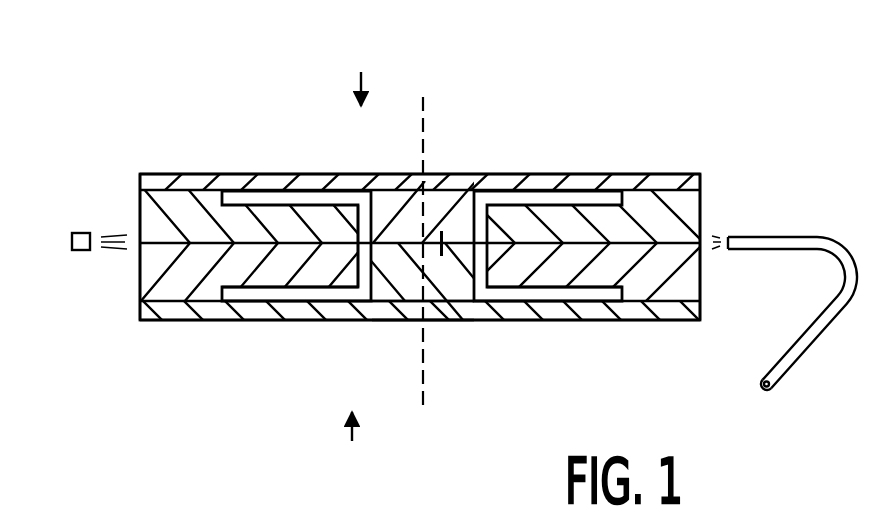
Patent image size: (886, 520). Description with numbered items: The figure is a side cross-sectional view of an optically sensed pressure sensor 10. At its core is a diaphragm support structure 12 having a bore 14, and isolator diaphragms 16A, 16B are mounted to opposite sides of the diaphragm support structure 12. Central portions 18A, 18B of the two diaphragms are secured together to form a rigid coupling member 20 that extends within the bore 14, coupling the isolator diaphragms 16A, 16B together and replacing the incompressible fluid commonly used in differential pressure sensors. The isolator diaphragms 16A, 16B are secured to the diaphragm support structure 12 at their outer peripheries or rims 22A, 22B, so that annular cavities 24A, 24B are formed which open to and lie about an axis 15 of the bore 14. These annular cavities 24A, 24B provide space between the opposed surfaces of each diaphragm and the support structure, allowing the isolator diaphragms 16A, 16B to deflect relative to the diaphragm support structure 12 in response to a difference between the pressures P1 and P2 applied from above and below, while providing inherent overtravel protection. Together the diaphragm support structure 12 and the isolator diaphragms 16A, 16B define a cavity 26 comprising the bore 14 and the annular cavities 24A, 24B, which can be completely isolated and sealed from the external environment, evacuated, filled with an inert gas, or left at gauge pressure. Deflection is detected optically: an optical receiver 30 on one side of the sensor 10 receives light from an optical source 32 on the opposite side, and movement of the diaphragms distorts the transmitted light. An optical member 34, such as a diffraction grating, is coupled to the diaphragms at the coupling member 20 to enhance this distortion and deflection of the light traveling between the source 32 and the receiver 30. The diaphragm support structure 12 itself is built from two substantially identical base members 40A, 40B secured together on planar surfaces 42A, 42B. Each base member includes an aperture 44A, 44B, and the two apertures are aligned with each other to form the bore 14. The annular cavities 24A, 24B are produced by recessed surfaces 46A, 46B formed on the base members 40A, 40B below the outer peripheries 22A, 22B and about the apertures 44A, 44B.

The pressure sensor 10 is at (668, 118).
The diaphragm support structure 12 is at (104, 211).
The bore 14 is at (410, 305).
The axis 15 is at (423, 97).
The isolator diaphragm 16A is at (431, 200).
The isolator diaphragm 16B is at (441, 320).
The portion 18A is at (478, 224).
The portion 18B is at (453, 272).
The rigid coupling member 20 is at (420, 296).
The outer periphery 22A is at (678, 203).
The outer periphery 22B is at (678, 273).
The annular cavity 24A is at (225, 197).
The annular cavity 24B is at (221, 318).
The cavity 26 is at (343, 196).
The optical receiver 30 is at (70, 233).
The optical source 32 is at (818, 244).
The optical member 34 is at (443, 238).
The base member 40A is at (147, 208).
The base member 40B is at (150, 287).
The planar surface 42A is at (150, 247).
The planar surface 42B is at (192, 242).
The aperture 44A is at (367, 222).
The aperture 44B is at (358, 282).
The recessed surface 46A is at (299, 197).
The recessed surface 46B is at (262, 303).
The pressure P1 is at (358, 73).
The pressure P2 is at (346, 449).